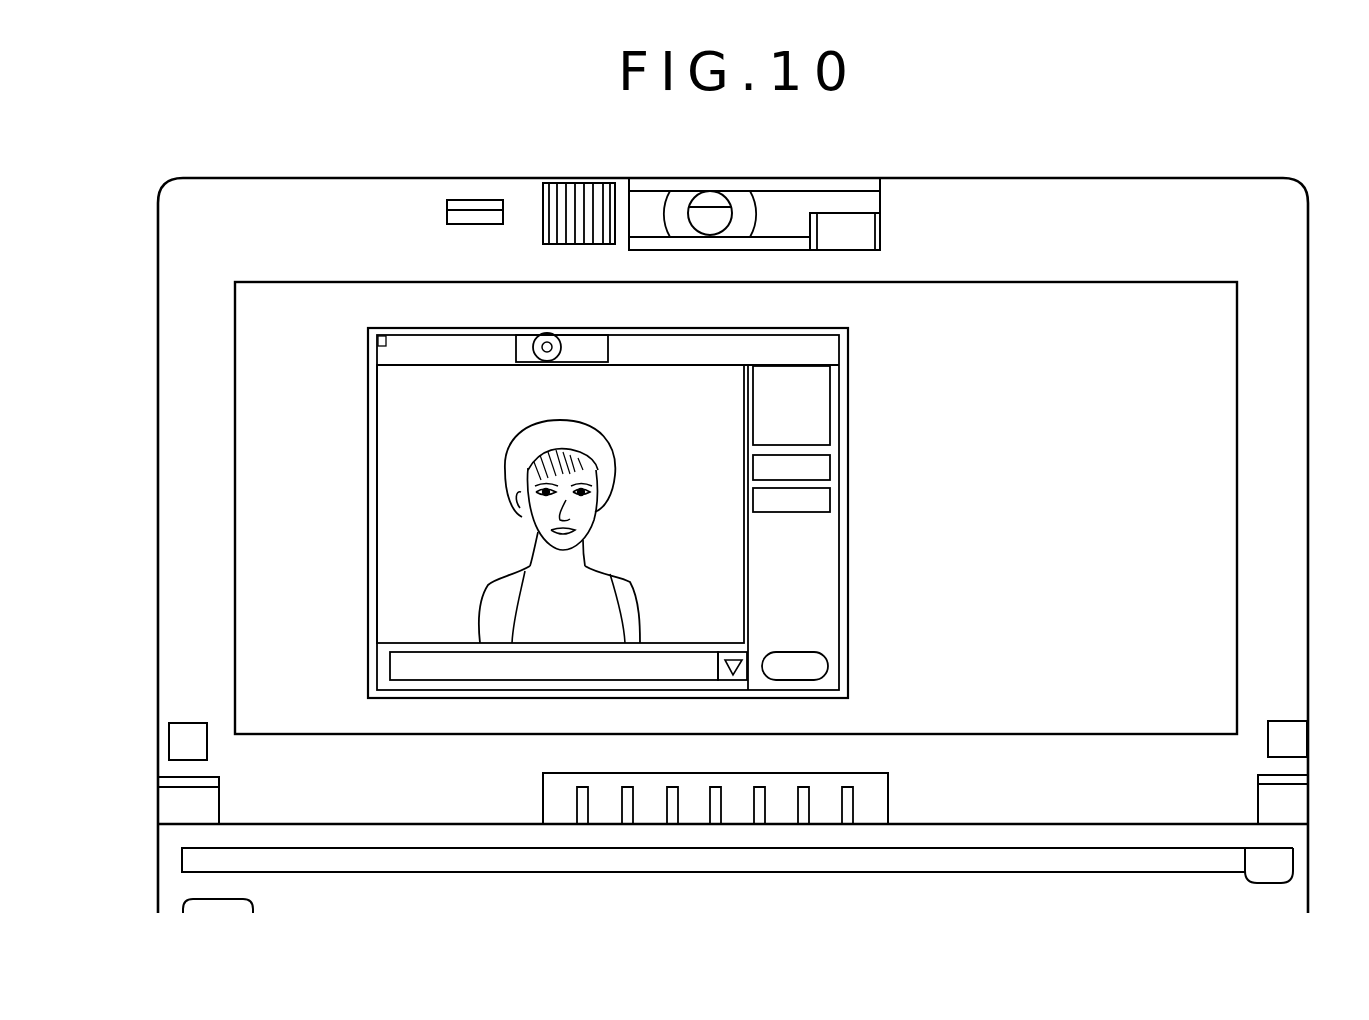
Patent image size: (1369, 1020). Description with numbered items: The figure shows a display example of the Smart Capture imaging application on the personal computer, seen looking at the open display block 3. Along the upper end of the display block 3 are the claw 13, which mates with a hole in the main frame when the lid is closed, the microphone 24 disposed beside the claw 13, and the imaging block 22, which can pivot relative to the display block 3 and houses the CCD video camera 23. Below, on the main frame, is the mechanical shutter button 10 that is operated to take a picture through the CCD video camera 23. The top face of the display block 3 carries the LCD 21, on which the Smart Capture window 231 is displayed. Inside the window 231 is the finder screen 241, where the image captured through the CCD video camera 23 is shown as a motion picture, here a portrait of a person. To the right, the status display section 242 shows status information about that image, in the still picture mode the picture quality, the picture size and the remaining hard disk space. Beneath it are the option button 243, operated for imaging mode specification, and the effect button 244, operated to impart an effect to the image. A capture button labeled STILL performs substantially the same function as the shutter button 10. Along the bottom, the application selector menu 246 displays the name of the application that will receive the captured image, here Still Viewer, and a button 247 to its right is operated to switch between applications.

The display block 3 is at (158, 330).
The shutter button 10 is at (1290, 866).
The claw 13 is at (482, 200).
The LCD 21 is at (257, 388).
The imaging block 22 is at (840, 200).
The CCD video camera 23 is at (713, 208).
The microphone 24 is at (588, 183).
The window 231 is at (470, 328).
The finder screen 241 is at (688, 378).
The status display section 242 is at (826, 377).
The option button 243 is at (832, 463).
The effect button 244 is at (832, 497).
The application selector menu 246 is at (825, 660).
The dropdown arrow button 247 is at (733, 682).